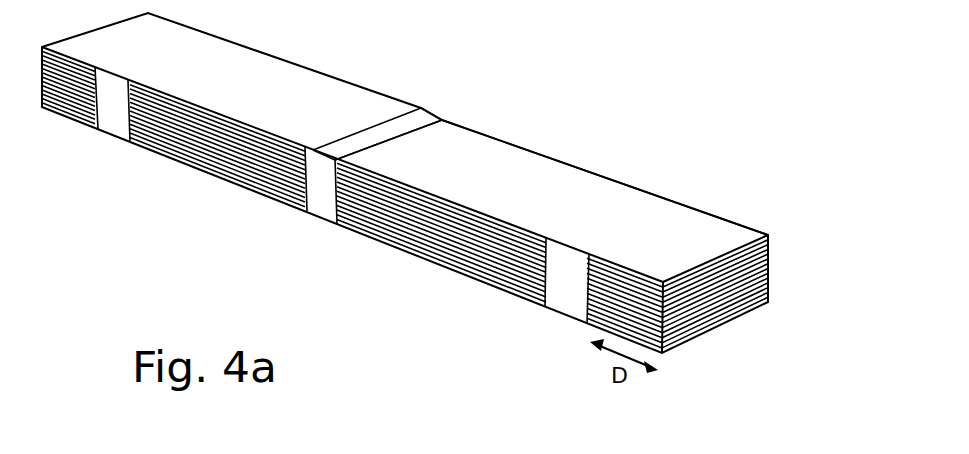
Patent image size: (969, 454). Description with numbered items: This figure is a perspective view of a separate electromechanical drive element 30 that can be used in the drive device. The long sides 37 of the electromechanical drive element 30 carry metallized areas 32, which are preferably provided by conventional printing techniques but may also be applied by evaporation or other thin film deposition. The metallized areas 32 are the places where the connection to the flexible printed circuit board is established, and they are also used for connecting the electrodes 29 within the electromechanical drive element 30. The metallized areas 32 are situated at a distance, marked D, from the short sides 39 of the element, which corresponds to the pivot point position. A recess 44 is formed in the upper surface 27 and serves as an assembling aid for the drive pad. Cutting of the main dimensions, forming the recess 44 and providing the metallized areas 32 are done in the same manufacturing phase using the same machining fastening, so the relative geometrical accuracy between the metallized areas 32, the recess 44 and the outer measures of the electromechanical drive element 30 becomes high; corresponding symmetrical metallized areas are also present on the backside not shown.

The upper surface 27 is at (650, 212).
The electrodes 29 is at (440, 245).
The electromechanical drive element 30 is at (520, 163).
The metallized areas 32 is at (108, 118).
The long sides 37 is at (222, 155).
The short sides 39 is at (727, 297).
The recess 44 is at (417, 122).